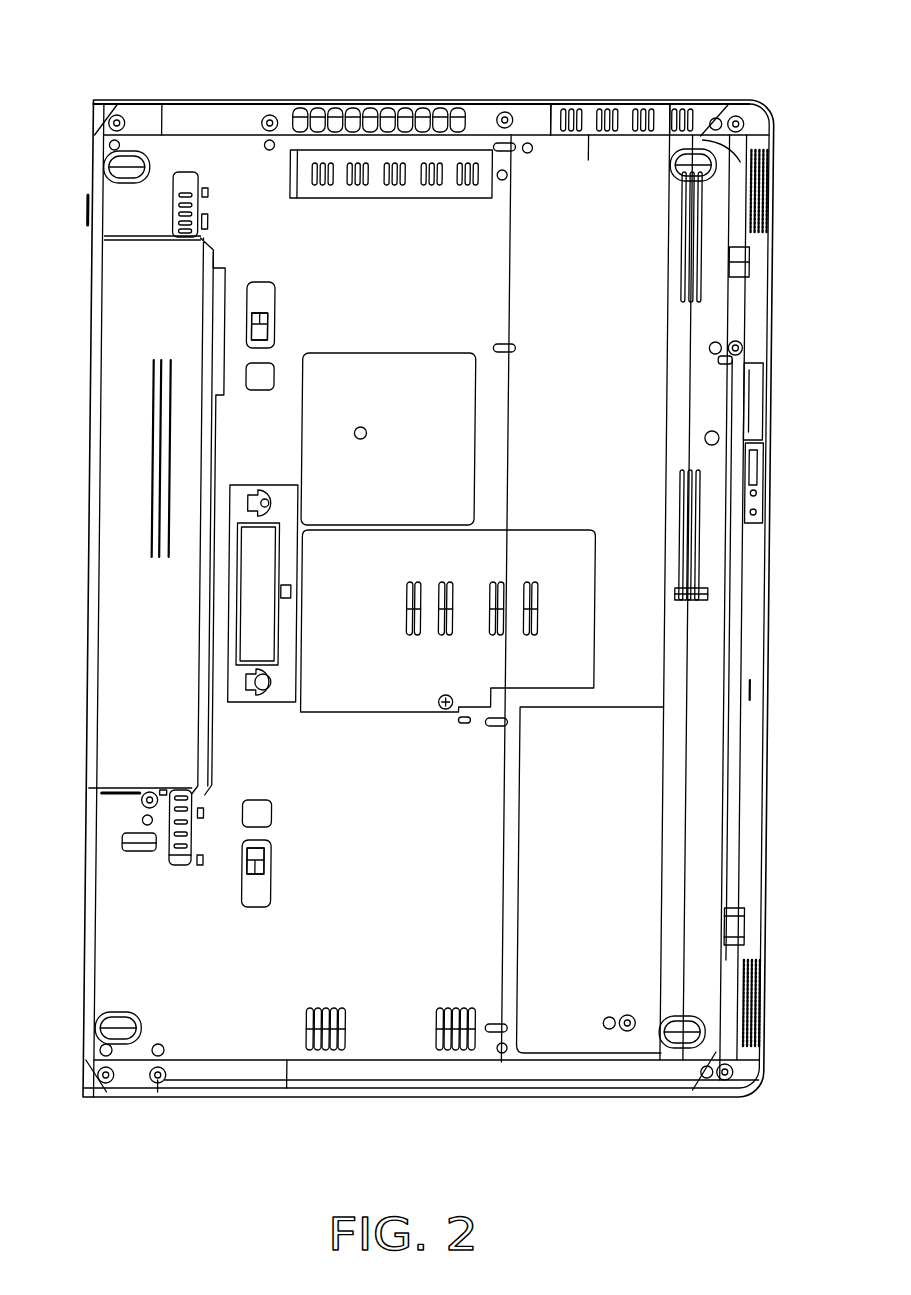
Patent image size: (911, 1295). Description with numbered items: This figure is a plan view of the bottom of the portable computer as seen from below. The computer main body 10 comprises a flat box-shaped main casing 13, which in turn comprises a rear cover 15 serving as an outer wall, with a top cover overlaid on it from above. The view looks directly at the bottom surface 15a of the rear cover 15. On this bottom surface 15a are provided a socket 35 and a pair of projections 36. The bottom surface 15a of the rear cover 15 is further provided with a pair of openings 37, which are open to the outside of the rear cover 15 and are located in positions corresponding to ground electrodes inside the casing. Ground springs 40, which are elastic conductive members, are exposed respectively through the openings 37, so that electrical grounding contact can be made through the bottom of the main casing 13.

The computer main body 10 is at (98, 94).
The main casing 13 is at (211, 99).
The rear cover 15 is at (531, 117).
The bottom surface 15a is at (592, 153).
The socket 35 is at (256, 623).
The projections 36 is at (256, 378).
The openings 37 is at (265, 327).
The ground springs 40 is at (271, 327).